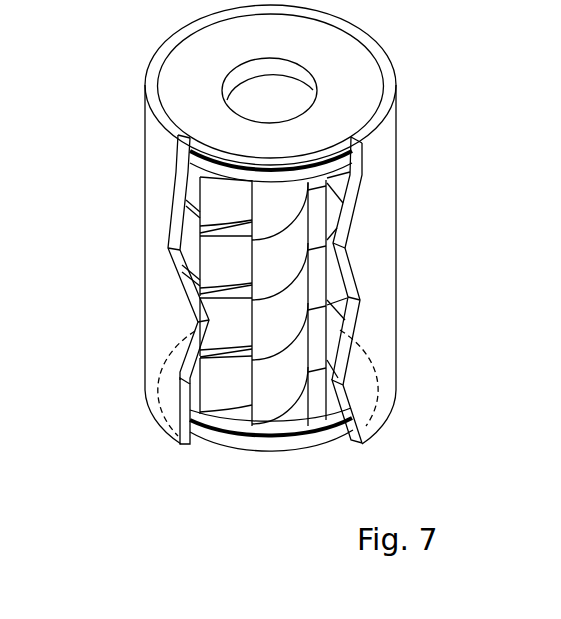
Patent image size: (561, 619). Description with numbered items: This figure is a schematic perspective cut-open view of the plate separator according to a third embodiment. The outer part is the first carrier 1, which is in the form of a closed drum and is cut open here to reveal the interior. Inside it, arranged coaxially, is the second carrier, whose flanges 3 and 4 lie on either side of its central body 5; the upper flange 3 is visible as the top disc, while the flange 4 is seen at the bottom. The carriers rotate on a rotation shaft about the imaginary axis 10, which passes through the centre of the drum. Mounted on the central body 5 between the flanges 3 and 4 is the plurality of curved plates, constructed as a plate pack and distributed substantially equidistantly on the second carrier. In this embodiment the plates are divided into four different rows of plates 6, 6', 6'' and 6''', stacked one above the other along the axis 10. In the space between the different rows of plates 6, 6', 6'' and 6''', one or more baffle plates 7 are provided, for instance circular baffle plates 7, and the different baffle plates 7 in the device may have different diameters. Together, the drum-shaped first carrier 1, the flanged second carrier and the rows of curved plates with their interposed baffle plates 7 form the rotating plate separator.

The first carrier 1 is at (397, 176).
The flange 3 is at (355, 93).
The flange 4 is at (237, 415).
The central body 5 is at (300, 100).
The curved plates 6 is at (210, 211).
The curved plates of second row 6' is at (210, 270).
The curved plates of third row 6'' is at (210, 402).
The curved plates of fourth row 6''' is at (223, 422).
The baffle plates 7 is at (335, 200).
The imaginary axis 10 is at (268, 100).